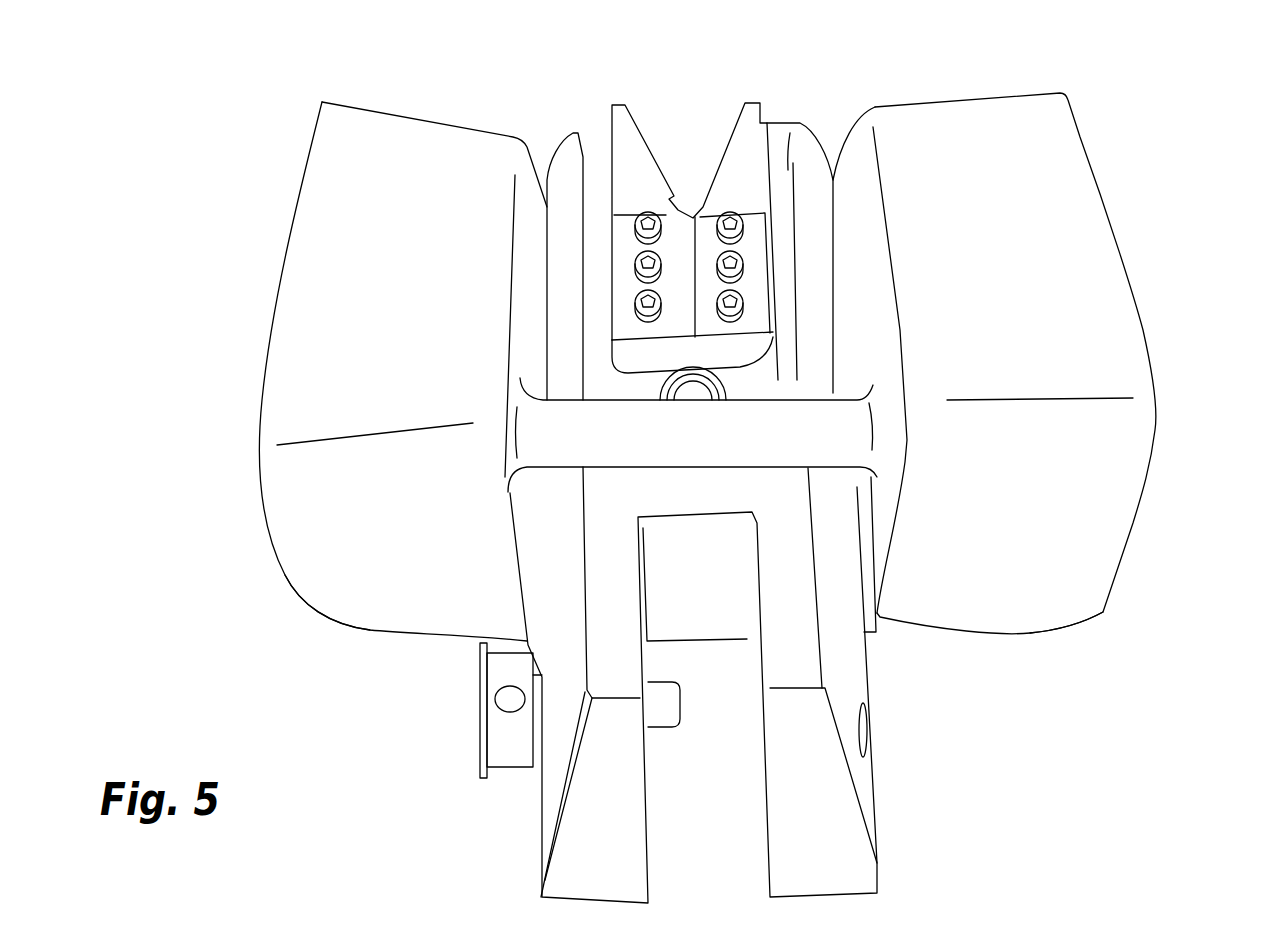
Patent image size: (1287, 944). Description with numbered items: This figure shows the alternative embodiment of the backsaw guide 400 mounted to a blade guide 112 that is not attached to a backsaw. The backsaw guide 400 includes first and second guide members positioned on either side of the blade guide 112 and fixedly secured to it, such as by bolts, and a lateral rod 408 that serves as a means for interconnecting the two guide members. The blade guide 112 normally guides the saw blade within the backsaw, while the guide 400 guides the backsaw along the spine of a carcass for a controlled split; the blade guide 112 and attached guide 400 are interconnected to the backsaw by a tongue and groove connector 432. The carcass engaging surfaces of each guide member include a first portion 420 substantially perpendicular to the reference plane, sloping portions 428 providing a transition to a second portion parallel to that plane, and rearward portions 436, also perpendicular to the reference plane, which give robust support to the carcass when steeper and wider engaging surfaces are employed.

The backsaw guide 400 is at (1176, 160).
The blade guide 112 is at (812, 74).
The first portion 420 is at (470, 112).
The sloping portions 428 is at (371, 286).
The rearward portions 436 is at (351, 552).
The lateral rod 408 is at (684, 451).
The tongue and groove connector 432 is at (886, 789).